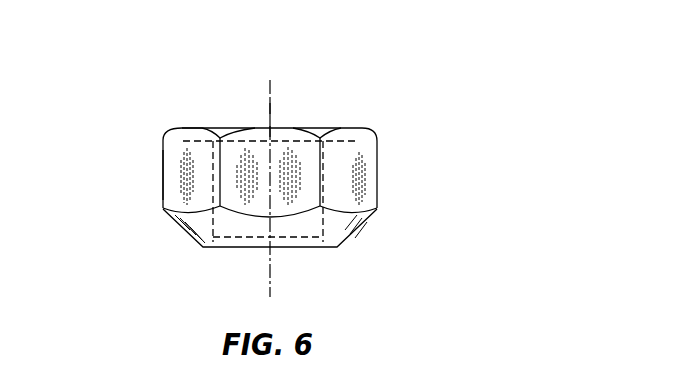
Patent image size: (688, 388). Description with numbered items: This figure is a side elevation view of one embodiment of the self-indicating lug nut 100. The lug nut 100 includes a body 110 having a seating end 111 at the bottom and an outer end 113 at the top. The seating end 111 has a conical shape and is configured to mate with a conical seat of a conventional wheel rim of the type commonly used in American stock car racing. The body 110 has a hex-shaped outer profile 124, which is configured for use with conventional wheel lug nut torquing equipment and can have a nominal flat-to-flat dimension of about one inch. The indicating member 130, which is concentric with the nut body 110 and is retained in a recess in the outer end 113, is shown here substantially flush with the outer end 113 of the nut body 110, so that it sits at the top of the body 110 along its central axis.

The self-indicating lug nut 100 is at (428, 75).
The body 110 is at (377, 158).
The seating end 111 is at (350, 237).
The outer end 113 is at (185, 128).
The hex-shaped outer profile 124 is at (165, 192).
The indicating member 130 is at (290, 125).